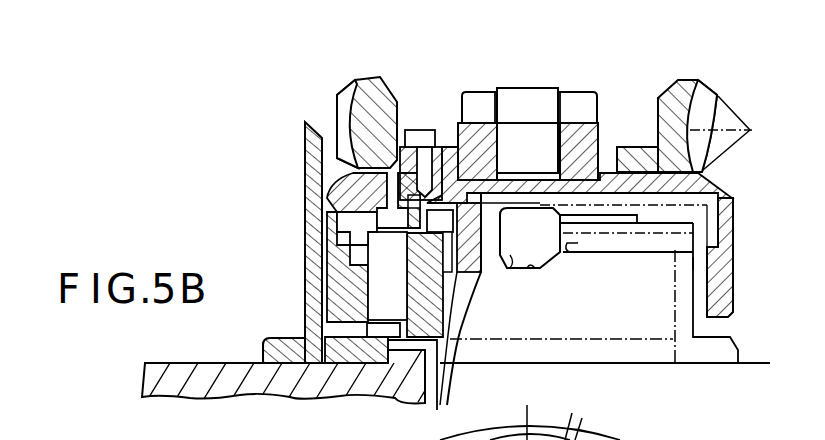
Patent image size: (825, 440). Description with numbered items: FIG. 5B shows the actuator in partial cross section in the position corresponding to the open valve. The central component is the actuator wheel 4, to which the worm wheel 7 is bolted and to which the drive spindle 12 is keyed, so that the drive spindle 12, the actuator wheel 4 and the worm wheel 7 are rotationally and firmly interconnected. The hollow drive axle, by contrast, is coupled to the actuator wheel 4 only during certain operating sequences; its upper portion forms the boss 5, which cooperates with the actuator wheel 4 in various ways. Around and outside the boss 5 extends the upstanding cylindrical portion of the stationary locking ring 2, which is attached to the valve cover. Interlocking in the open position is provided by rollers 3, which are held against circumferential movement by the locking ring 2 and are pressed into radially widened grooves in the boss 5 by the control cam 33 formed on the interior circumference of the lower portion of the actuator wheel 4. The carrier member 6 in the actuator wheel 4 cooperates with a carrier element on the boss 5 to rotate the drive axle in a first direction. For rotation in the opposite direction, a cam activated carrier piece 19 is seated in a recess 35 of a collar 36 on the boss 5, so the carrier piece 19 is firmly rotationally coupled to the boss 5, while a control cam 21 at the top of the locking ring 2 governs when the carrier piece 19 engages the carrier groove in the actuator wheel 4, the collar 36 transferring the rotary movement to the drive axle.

The locking ring 2 is at (344, 366).
The roller 3 is at (380, 290).
The actuator wheel 4 is at (477, 167).
The boss 5 is at (462, 320).
The carrier member 6 is at (316, 205).
The worm wheel 7 is at (337, 112).
The drive spindle 12 is at (510, 135).
The carrier piece 19 is at (512, 266).
The control cam 21 is at (533, 270).
The control cam 33 is at (306, 318).
The recess 35 is at (578, 248).
The collar 36 is at (712, 249).